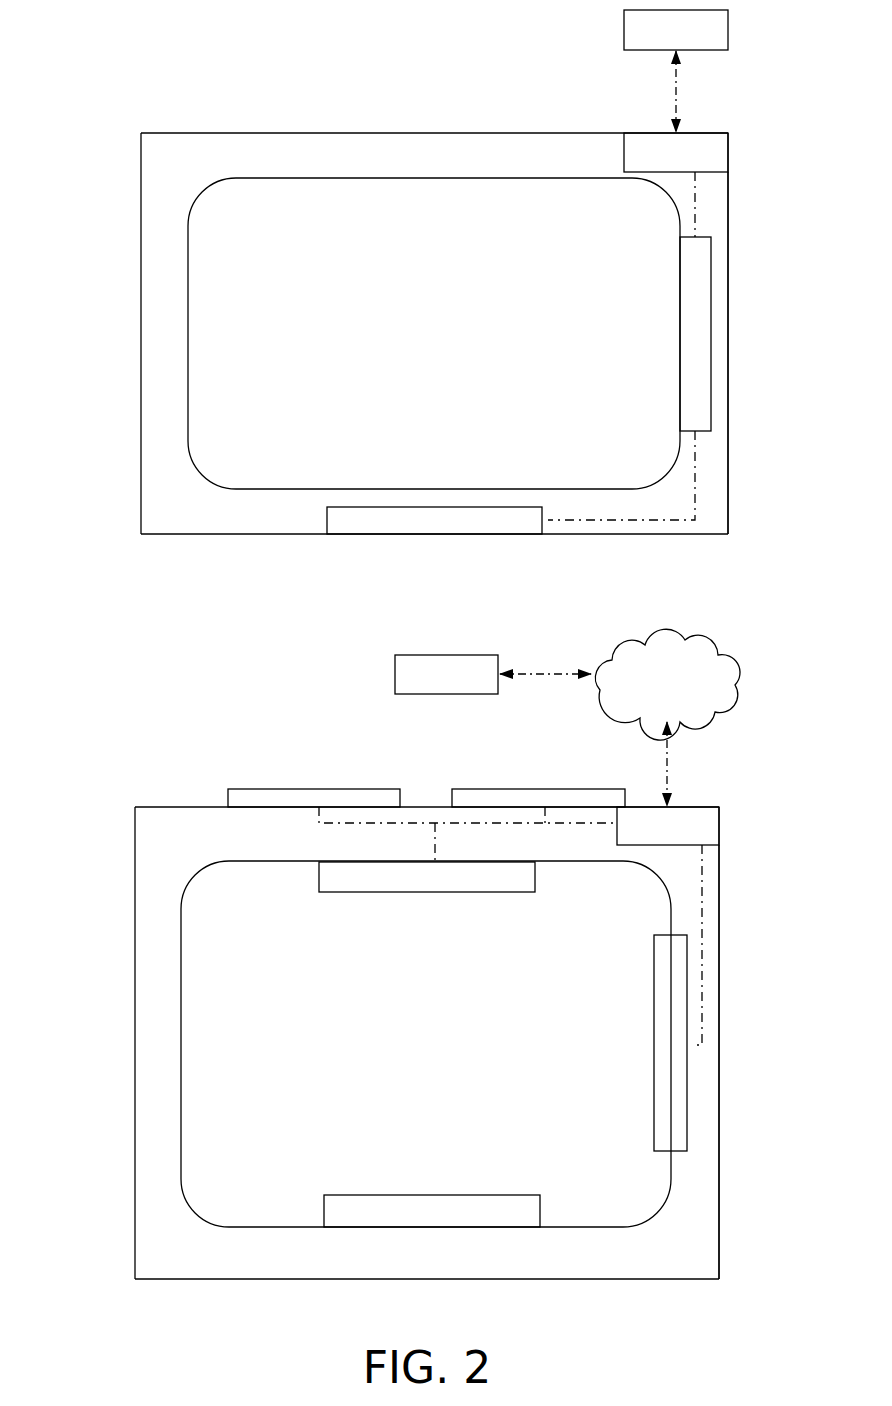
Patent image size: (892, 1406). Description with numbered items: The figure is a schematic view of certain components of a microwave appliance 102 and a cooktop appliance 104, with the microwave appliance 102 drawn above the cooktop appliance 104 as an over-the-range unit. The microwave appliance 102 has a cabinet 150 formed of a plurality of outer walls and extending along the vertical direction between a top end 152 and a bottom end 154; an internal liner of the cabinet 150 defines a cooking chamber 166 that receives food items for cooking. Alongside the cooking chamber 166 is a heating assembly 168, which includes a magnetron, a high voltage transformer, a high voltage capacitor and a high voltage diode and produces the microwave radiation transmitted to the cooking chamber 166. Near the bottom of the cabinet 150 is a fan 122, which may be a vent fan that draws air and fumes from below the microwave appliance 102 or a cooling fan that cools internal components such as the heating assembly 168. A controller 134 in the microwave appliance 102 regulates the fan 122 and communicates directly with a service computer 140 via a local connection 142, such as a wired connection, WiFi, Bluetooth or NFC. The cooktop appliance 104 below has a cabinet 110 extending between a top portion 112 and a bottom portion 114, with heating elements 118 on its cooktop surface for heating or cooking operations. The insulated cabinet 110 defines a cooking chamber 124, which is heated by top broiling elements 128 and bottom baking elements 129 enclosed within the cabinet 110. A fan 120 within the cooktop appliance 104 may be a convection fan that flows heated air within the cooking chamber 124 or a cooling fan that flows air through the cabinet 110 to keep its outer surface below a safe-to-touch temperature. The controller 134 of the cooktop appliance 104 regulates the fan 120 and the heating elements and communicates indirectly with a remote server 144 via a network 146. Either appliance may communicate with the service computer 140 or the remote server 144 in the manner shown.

The microwave appliance 102 is at (217, 123).
The cooktop appliance 104 is at (179, 789).
The cabinet 110 is at (705, 1160).
The top portion 112 is at (134, 833).
The bottom portion 114 is at (134, 1263).
The heating elements 118 is at (268, 797).
The fan 120 is at (672, 1062).
The fan 122 is at (510, 520).
The cooking chamber 124 is at (229, 1048).
The top broiling elements 128 is at (470, 875).
The bottom baking elements 129 is at (473, 1210).
The controller 134 is at (672, 489).
The service computer 140 is at (676, 30).
The local connection 142 is at (674, 89).
The remote server 144 is at (493, 674).
The network 146 is at (667, 717).
The cabinet 150 is at (710, 490).
The top end 152 is at (140, 142).
The bottom end 154 is at (140, 523).
The cooking chamber 166 is at (231, 333).
The heating assembly 168 is at (696, 325).